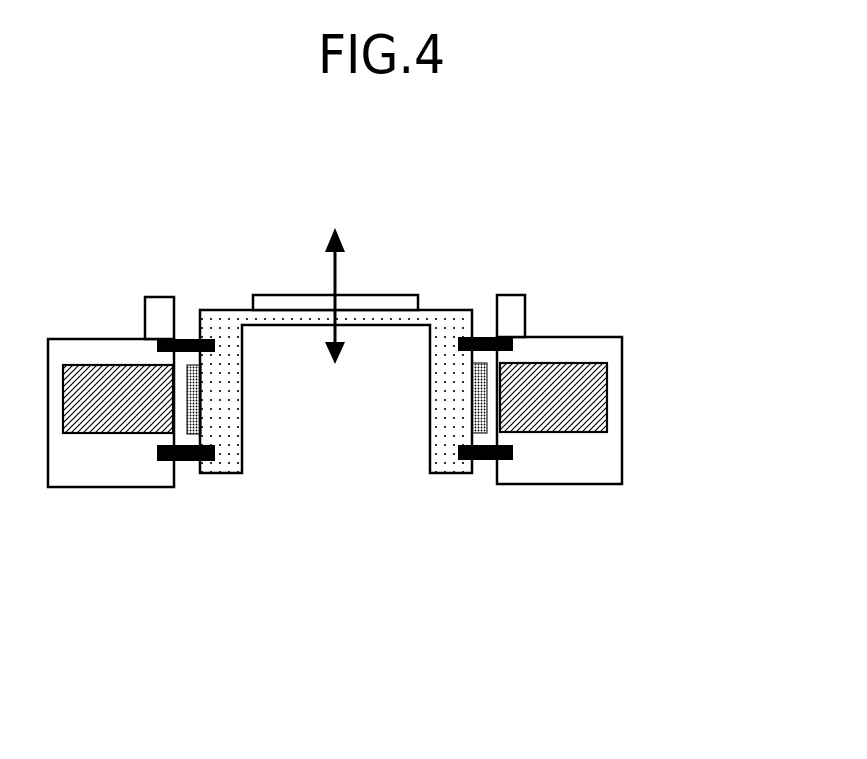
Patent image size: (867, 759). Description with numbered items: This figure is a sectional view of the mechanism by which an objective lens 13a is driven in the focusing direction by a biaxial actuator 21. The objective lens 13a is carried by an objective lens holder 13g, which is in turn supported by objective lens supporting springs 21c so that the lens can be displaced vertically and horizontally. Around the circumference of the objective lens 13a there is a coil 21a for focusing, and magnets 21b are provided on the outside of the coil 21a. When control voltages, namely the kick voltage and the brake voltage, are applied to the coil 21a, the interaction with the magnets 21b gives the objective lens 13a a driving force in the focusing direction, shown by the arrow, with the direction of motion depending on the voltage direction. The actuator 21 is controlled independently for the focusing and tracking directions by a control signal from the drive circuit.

The objective lens 13a is at (377, 297).
The objective lens holder 13g is at (225, 310).
The actuator 21 is at (515, 465).
The coil for focusing 21a is at (517, 363).
The magnets 21b is at (587, 363).
The objective lens supporting springs 21c is at (458, 353).